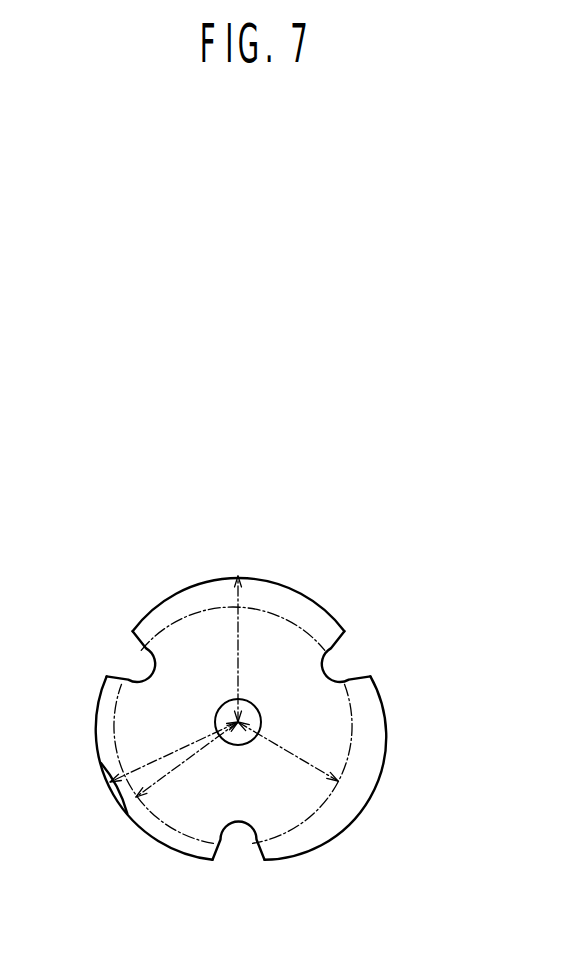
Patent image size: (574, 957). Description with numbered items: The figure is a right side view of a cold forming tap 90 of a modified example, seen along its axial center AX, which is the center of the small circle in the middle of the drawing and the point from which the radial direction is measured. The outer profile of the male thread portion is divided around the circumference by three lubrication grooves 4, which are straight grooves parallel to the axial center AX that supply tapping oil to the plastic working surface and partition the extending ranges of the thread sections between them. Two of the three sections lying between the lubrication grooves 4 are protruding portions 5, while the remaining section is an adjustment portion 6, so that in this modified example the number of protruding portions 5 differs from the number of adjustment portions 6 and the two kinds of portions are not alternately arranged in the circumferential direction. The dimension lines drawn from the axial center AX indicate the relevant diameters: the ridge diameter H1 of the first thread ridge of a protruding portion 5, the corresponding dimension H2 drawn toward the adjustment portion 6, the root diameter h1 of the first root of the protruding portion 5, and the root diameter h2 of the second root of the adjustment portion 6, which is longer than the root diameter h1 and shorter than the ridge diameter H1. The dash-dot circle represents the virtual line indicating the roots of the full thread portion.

The cold forming tap 90 is at (361, 575).
The protruding portion 5 is at (238, 577).
The lubrication groove 4 is at (155, 652).
The adjustment portion 6 is at (112, 794).
The axial center AX is at (239, 728).
The ridge diameter H1 is at (254, 649).
The outer radius dimension (second) H2 is at (174, 752).
The root diameter h1 is at (288, 751).
The root diameter h2 is at (187, 759).